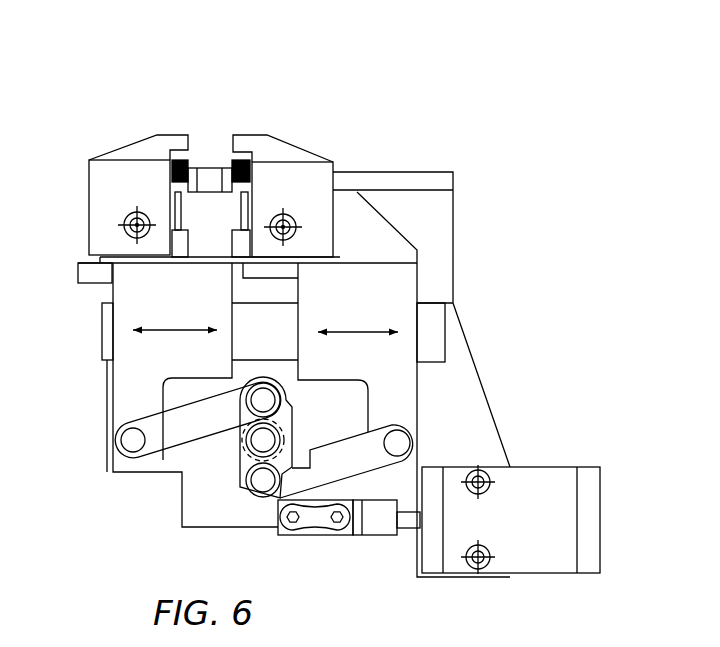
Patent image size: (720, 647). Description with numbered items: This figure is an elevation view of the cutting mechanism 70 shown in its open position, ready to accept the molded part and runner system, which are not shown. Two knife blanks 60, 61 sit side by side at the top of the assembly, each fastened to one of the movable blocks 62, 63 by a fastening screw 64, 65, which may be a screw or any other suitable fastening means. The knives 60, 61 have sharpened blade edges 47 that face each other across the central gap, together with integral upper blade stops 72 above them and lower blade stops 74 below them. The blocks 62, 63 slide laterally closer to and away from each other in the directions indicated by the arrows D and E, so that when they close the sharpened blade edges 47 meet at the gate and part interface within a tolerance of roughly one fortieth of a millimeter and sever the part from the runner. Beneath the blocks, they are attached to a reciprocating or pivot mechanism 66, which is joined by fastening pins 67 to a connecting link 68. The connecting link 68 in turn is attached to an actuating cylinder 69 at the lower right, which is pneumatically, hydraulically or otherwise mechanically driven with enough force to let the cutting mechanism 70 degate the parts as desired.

The cutting mechanism 70 is at (268, 78).
The knife blank 60 is at (95, 178).
The knife blank 61 is at (325, 184).
The upper blade stop 72 is at (178, 135).
The sharpened blade edge 47 is at (232, 167).
The fastening screw 64 is at (122, 226).
The fastening screw 65 is at (297, 233).
The lower blade stop 74 is at (233, 246).
The movable block 62 is at (120, 313).
The movable block 63 is at (410, 288).
The fastening pin 67 is at (122, 443).
The reciprocating or pivot mechanism 66 is at (243, 453).
The connecting link 68 is at (313, 543).
The actuating cylinder 69 is at (543, 575).